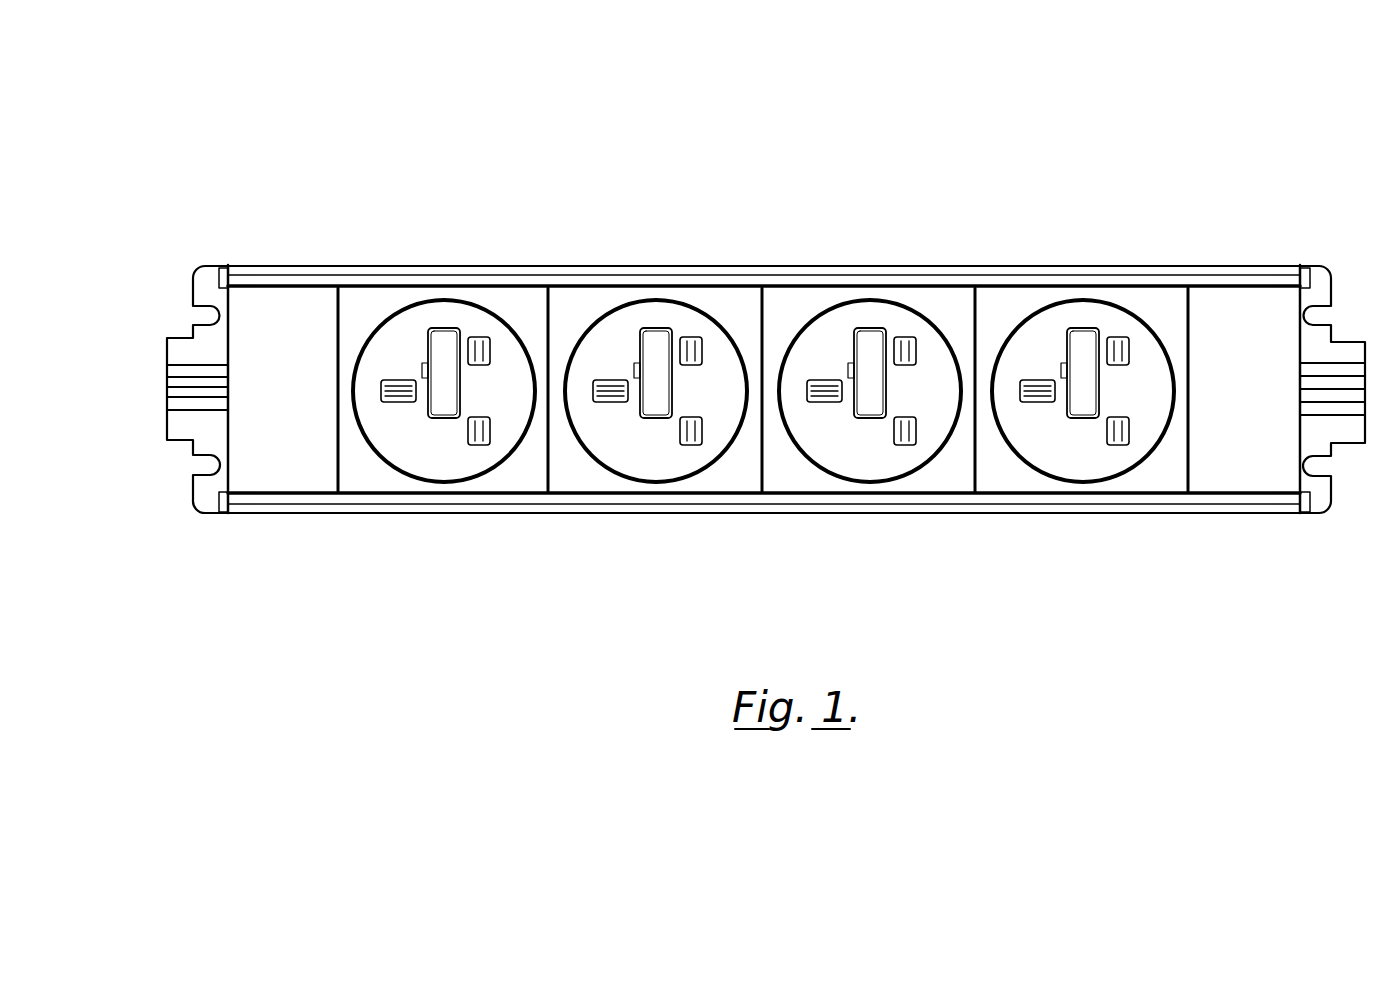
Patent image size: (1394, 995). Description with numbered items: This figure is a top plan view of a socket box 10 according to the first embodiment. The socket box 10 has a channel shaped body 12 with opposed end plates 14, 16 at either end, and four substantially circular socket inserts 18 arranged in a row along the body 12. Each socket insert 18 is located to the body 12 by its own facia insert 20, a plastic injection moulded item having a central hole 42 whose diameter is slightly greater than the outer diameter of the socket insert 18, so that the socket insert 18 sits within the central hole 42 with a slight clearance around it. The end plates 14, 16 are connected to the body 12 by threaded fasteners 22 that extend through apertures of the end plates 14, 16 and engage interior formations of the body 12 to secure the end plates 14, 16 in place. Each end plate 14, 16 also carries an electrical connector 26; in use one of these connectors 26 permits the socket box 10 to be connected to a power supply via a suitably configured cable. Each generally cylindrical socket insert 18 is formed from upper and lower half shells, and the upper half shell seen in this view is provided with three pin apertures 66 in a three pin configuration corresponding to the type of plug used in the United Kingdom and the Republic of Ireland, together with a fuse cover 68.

The socket box 10 is at (984, 122).
The channel shaped body 12 is at (583, 267).
The end plate 14 is at (1230, 313).
The end plate 16 is at (293, 336).
The socket insert 18 is at (405, 338).
The facia insert 20 is at (372, 468).
The threaded fastener 22 is at (217, 268).
The electrical connector 26 is at (175, 348).
The central hole 42 is at (443, 328).
The pin aperture 66 is at (492, 381).
The fuse cover 68 is at (436, 417).